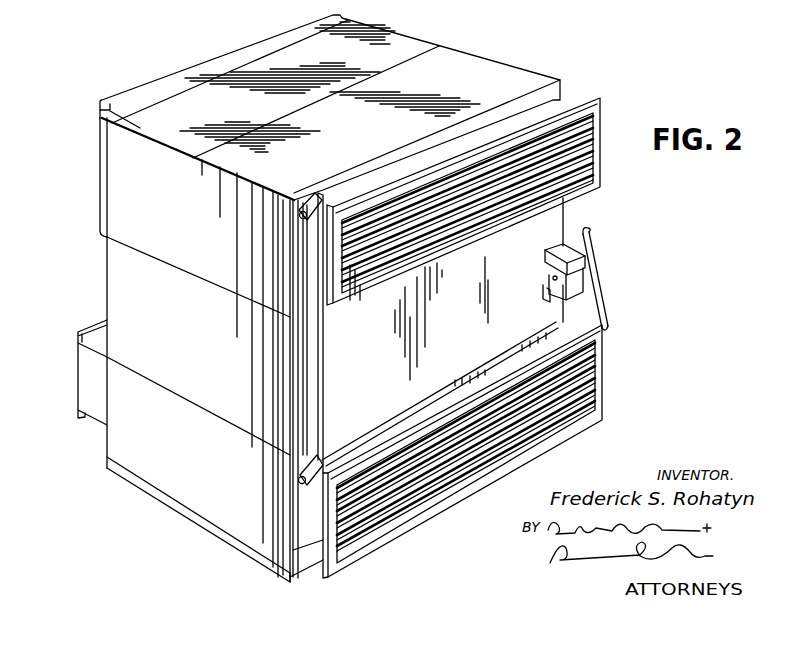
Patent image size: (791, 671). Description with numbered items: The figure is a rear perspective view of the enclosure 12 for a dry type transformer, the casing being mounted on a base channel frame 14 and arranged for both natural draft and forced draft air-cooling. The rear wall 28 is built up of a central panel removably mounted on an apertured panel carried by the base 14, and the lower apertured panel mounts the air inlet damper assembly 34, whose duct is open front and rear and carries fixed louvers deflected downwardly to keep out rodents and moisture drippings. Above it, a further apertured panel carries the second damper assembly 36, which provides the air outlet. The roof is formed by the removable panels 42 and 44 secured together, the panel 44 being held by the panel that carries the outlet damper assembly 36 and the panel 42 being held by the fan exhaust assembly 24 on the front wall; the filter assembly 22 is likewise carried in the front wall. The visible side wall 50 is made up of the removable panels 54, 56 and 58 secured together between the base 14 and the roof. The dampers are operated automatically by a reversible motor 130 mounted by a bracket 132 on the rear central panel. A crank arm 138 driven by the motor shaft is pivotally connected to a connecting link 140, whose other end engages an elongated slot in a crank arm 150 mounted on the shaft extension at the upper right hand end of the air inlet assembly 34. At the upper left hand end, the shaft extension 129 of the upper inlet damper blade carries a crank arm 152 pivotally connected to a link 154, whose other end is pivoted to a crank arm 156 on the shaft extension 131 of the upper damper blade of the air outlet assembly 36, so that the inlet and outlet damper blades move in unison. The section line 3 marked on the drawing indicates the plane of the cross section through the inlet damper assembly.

The section line 3- 3 is at (158, 62).
The enclosure 12 is at (170, 474).
The base channel frame 14 is at (208, 522).
The filter assembly 22 is at (88, 380).
The fan exhaust assembly 24 is at (128, 89).
The rear wall 28 is at (549, 219).
The air inlet damper assembly 34 is at (605, 385).
The second damper assembly 36 is at (565, 105).
The removable panel 42 is at (412, 38).
The removable panel 44 is at (487, 72).
The side wall 50 is at (138, 283).
The removable panel 54 is at (187, 452).
The removable panel 56 is at (194, 336).
The removable panel 58 is at (199, 216).
The shaft extension 129 is at (298, 480).
The motor 130 is at (546, 268).
The shaft extension 131 is at (299, 216).
The bracket 132 is at (545, 293).
The crank arm 138 is at (587, 237).
The connecting link 140 is at (600, 282).
The crank arm 150 is at (577, 330).
The crank arm 152 is at (307, 472).
The link 154 is at (320, 370).
The crank arm 156 is at (313, 194).